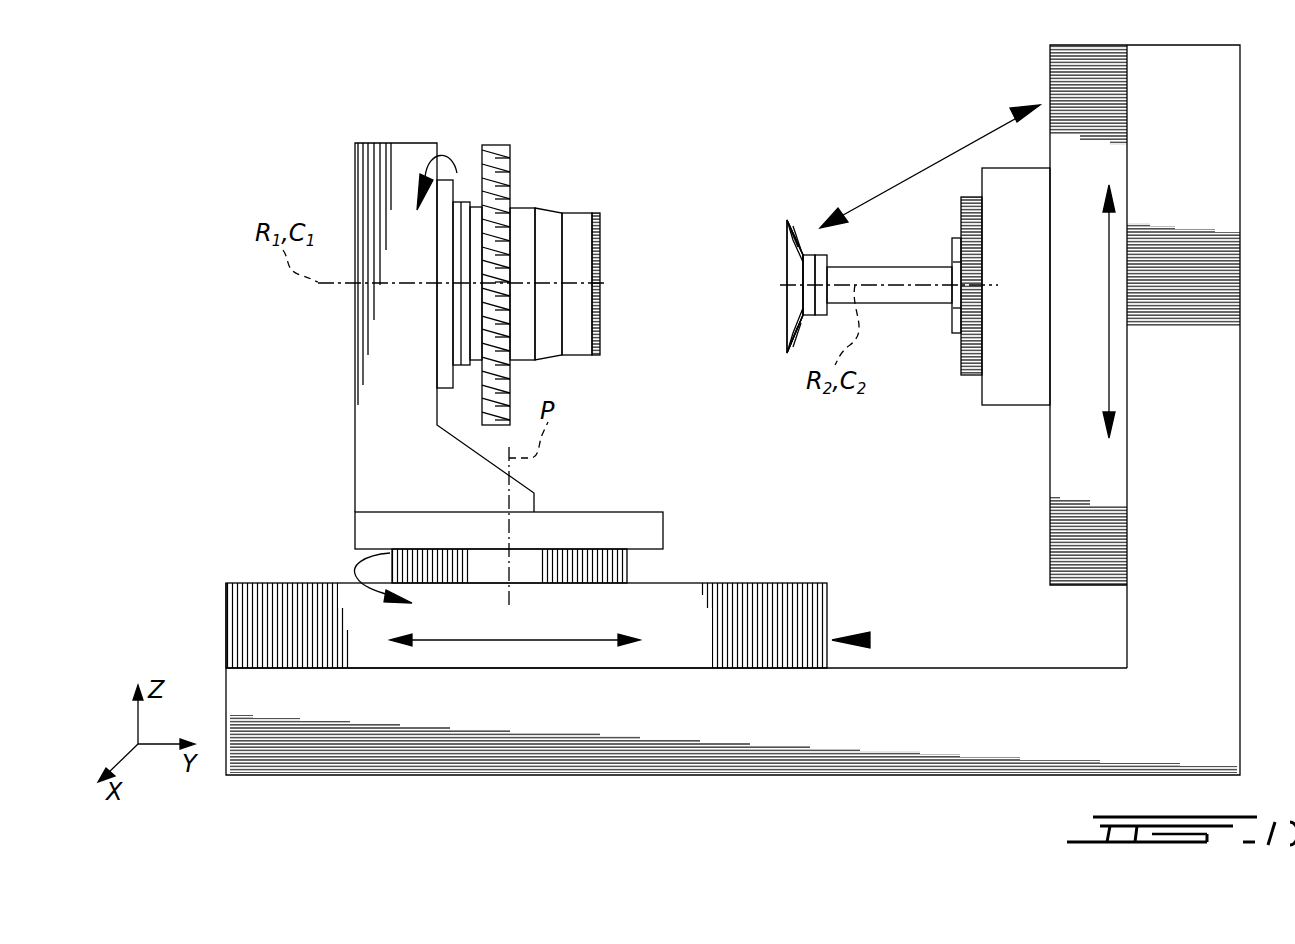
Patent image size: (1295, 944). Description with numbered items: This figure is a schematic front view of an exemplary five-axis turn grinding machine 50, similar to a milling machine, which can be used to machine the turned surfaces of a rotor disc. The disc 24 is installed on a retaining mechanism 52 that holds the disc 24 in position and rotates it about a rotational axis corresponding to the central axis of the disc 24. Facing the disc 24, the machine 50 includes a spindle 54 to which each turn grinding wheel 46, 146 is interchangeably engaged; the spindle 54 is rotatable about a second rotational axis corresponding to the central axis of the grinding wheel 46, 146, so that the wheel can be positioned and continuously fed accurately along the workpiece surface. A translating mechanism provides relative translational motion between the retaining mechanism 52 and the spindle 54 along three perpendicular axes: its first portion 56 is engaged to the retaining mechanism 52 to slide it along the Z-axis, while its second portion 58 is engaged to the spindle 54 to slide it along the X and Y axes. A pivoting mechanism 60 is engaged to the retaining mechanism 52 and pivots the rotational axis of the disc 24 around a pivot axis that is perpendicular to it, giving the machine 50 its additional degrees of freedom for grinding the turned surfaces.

The turn grinding machine 50 is at (258, 118).
The retaining mechanism 52 is at (437, 153).
The disc 24 is at (530, 198).
The turn grinding wheel 46 is at (787, 222).
The turn grinding wheel 146 is at (795, 286).
The spindle 54 is at (905, 298).
The first portion of translating mechanism 56 is at (772, 600).
The second portion of translating mechanism 58 is at (1072, 473).
The pivoting mechanism 60 is at (519, 565).